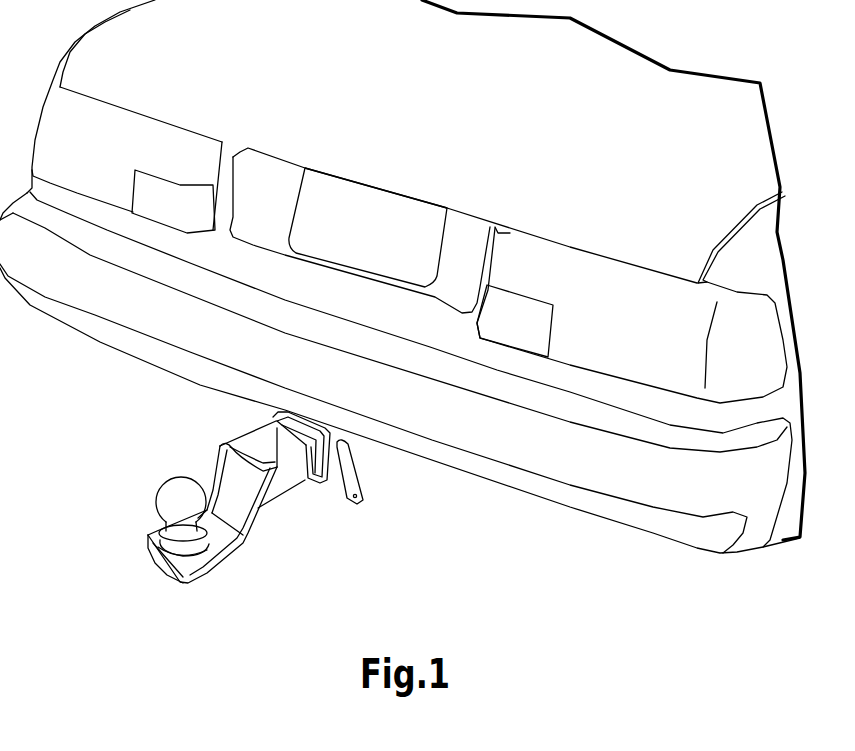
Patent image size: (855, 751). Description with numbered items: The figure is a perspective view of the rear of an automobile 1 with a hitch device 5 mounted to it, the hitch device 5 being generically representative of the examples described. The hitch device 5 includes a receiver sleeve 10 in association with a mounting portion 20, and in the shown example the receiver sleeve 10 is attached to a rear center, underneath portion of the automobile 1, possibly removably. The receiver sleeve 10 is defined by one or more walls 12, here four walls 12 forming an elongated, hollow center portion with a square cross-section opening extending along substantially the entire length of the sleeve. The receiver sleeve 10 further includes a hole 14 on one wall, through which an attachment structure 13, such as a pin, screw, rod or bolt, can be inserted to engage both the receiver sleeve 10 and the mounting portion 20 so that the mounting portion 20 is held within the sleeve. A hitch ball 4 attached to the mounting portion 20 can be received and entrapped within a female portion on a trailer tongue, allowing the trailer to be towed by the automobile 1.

The automobile 1 is at (338, 352).
The hitch ball 4 is at (163, 488).
The hitch device 5 is at (257, 548).
The receiver sleeve 10 is at (334, 507).
The walls 12 is at (277, 417).
The attachment structure 13 is at (357, 484).
The hole 14 is at (332, 437).
The mounting portion 20 is at (220, 578).